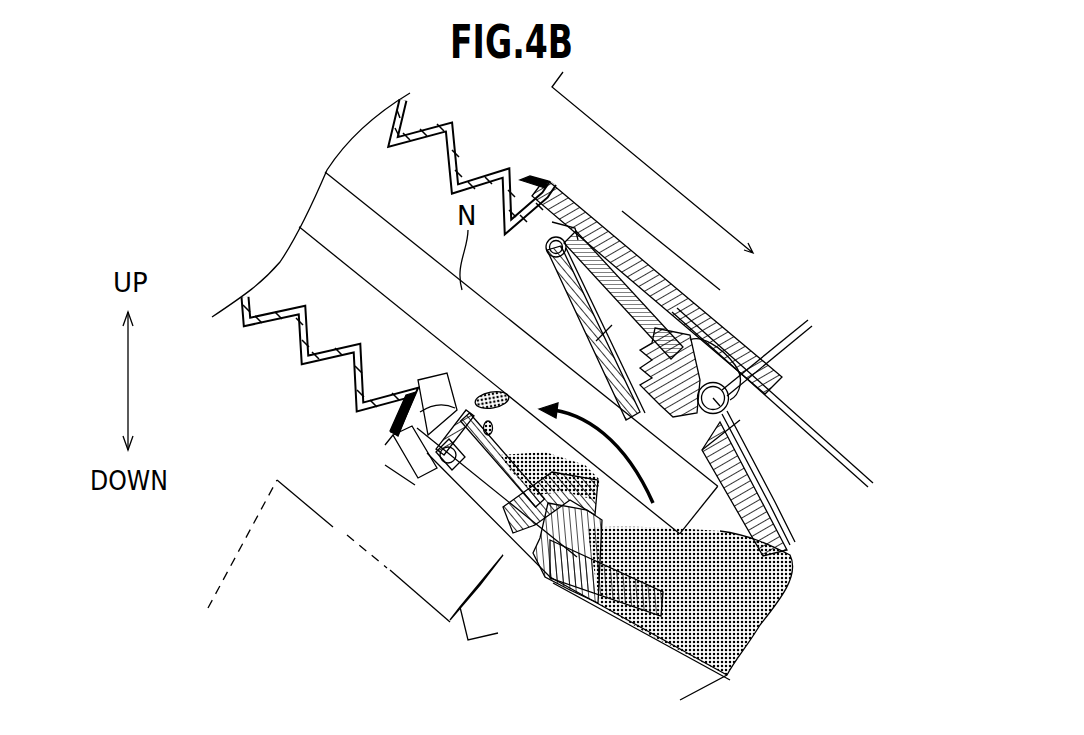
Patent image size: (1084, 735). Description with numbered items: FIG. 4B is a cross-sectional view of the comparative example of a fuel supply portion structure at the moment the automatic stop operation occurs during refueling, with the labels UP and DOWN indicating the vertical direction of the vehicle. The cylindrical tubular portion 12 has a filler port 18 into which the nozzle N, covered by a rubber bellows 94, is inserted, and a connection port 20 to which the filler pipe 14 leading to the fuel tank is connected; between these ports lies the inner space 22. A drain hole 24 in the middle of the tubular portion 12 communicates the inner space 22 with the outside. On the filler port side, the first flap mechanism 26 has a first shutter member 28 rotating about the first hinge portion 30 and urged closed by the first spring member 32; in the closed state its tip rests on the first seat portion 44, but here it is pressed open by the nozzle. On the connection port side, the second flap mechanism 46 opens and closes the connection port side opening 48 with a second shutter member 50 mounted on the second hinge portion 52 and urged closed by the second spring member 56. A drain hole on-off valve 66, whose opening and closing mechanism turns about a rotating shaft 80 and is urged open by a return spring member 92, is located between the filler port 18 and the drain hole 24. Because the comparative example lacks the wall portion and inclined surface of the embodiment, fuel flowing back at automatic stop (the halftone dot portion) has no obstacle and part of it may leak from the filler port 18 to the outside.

The tubular portion 12 is at (625, 212).
The filler pipe 14 is at (807, 450).
The filler port 18 is at (395, 398).
The connection port 20 is at (607, 603).
The inner space 22 is at (551, 322).
The drain hole 24 is at (520, 515).
The first flap mechanism 26 is at (723, 293).
The first shutter member 28 is at (727, 277).
The first hinge portion 30 is at (660, 184).
The first spring member 32 is at (553, 182).
The first seat portion 44 is at (430, 378).
The second flap mechanism 46 is at (780, 492).
The connection port side opening 48 is at (565, 590).
The second shutter member 50 is at (790, 534).
The second hinge portion 52 is at (773, 433).
The second spring member 56 is at (760, 370).
The drain hole on-off valve 66 is at (510, 497).
The rotating shaft 80 is at (438, 458).
The return spring member 92 is at (430, 465).
The rubber bellows 94 is at (467, 172).